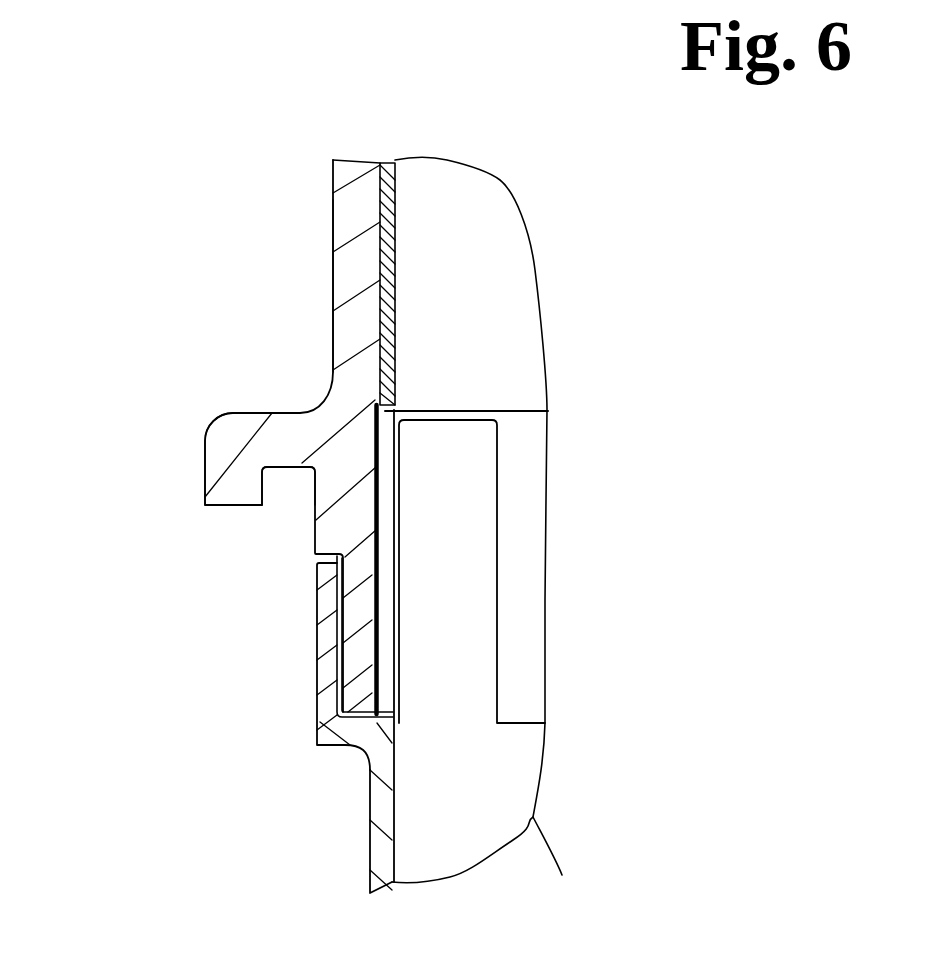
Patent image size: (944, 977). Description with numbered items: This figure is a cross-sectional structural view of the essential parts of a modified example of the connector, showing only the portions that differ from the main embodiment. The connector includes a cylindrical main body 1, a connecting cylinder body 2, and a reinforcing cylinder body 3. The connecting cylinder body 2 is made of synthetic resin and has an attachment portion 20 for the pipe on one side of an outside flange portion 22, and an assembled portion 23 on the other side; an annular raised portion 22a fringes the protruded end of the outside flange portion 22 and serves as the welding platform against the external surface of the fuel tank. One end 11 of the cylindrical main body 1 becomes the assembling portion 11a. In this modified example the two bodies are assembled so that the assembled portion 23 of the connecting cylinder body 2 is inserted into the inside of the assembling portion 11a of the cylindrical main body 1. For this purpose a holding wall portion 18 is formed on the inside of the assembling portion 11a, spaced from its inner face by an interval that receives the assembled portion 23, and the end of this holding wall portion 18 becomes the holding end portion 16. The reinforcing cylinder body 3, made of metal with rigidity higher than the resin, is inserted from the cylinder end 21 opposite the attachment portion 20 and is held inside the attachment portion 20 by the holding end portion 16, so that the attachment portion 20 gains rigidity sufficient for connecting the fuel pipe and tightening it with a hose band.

The cylindrical main body 1 is at (367, 853).
The connecting cylinder body 2 is at (347, 220).
The reinforcing cylinder body 3 is at (453, 200).
The one end 11 is at (322, 565).
The assembling portion 11a is at (493, 795).
The holding end portion 16 is at (453, 407).
The holding wall portion 18 is at (455, 565).
The attachment portion 20 is at (345, 287).
The cylinder end 21 is at (351, 747).
The outside flange portion 22 is at (208, 458).
The annular raised portion 22a is at (232, 505).
The assembled portion 23 is at (352, 648).